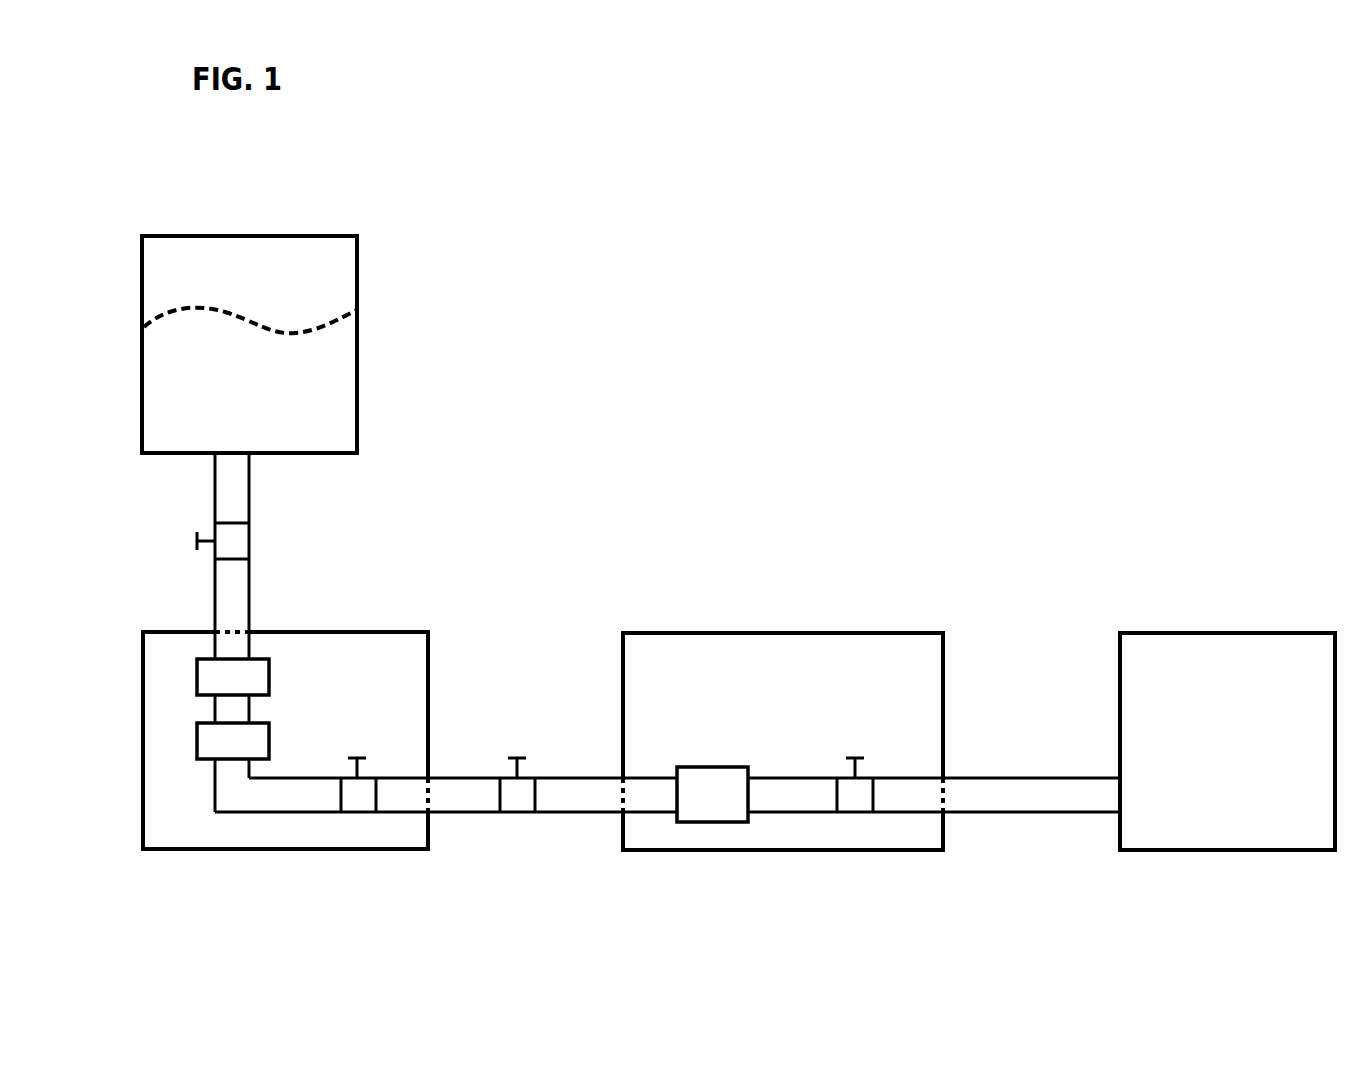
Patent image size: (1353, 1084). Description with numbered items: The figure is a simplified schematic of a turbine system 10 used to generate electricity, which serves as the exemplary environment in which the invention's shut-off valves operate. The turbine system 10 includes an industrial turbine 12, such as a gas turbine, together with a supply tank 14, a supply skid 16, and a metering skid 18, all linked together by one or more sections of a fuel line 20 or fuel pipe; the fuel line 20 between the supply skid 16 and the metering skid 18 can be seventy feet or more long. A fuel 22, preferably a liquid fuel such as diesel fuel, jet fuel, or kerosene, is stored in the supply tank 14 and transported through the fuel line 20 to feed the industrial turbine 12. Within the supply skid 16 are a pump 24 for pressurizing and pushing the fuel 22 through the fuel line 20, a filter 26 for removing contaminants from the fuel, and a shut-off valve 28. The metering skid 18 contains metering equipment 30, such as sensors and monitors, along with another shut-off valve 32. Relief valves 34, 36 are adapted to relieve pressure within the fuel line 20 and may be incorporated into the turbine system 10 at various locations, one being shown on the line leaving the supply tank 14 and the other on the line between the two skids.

The turbine system 10 is at (715, 335).
The industrial turbine 12 is at (1250, 633).
The supply tank 14 is at (357, 263).
The supply skid 16 is at (430, 657).
The metering skid 18 is at (868, 633).
The fuel line 20 is at (250, 597).
The fuel 22 is at (320, 390).
The pump 24 is at (197, 680).
The filter 26 is at (197, 743).
The shut-off valve 28 is at (350, 812).
The metering equipment 30 is at (717, 822).
The shut-off valve 32 is at (845, 813).
The relief valve 34 is at (250, 540).
The relief valve 36 is at (512, 813).